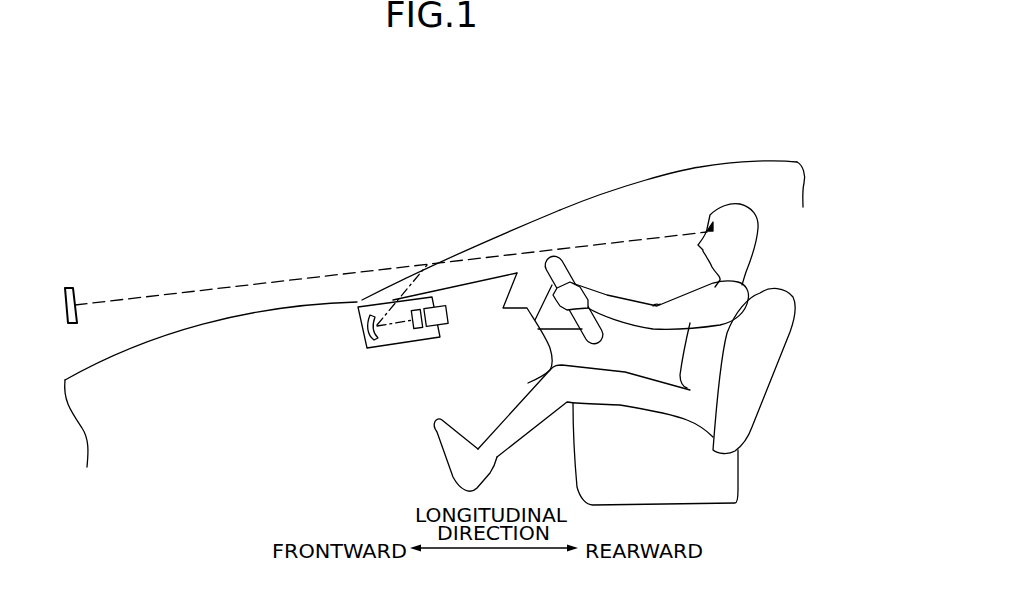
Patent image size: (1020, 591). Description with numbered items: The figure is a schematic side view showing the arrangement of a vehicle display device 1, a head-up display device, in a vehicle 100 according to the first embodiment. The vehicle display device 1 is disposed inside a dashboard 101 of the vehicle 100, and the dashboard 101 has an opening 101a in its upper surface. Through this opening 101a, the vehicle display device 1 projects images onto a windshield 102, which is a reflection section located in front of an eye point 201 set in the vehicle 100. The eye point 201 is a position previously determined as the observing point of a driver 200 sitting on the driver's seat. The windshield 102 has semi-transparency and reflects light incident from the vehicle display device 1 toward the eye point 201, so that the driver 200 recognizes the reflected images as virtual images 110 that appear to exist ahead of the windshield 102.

The vehicle 100 is at (655, 124).
The vehicle display device 1 is at (360, 298).
The dashboard 101 is at (487, 277).
The opening 101a is at (390, 303).
The windshield 102 is at (450, 246).
The virtual images 110 is at (68, 288).
The driver 200 is at (757, 197).
The eye point 201 is at (713, 214).